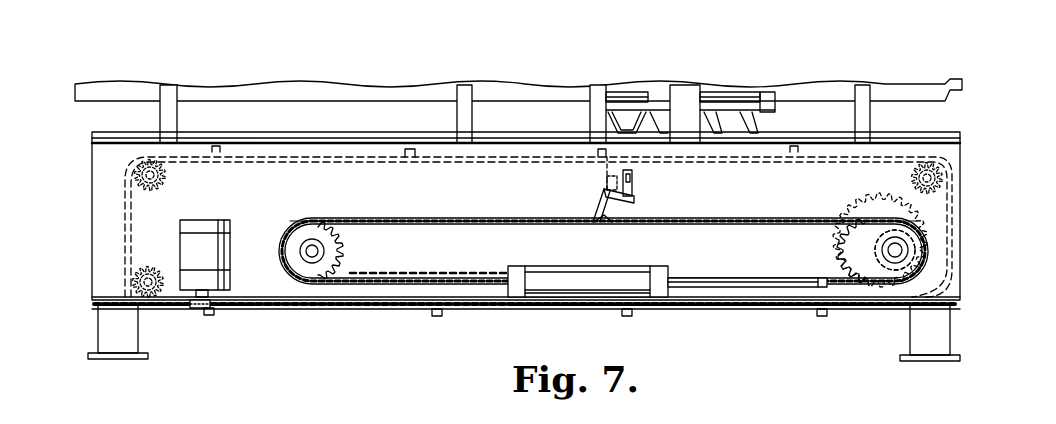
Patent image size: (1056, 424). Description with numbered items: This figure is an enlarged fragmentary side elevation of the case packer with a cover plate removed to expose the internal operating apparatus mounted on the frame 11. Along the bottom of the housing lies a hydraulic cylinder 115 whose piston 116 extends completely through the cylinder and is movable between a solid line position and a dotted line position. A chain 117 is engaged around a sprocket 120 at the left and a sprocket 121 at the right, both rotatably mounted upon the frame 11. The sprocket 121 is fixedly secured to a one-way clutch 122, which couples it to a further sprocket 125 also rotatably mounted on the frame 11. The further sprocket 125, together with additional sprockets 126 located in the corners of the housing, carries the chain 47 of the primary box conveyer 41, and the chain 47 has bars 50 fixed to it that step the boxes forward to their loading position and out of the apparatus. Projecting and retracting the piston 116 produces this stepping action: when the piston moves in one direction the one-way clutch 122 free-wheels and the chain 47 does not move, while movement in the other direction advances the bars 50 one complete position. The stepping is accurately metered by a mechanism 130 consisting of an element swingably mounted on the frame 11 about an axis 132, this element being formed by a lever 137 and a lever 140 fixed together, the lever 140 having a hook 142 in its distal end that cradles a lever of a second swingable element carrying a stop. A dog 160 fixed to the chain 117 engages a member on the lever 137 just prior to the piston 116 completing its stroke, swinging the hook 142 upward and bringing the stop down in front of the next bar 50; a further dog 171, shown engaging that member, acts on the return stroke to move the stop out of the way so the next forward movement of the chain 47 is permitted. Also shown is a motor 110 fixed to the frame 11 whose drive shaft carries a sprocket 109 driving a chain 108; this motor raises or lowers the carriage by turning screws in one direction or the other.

The frame 11 is at (112, 326).
The primary box conveyer 41 is at (520, 163).
The chain 47 is at (459, 160).
The bars 50 is at (217, 147).
The chain 108 is at (198, 308).
The sprocket 109 is at (211, 314).
The motor 110 is at (230, 244).
The hydraulic cylinder 115 is at (597, 273).
The piston 116 is at (699, 280).
The chain 117 is at (726, 219).
The sprocket 120 is at (334, 243).
The sprocket 121 is at (864, 247).
The one-way clutch 122 is at (880, 200).
The further sprocket 125 is at (947, 246).
The additional sprockets 126 is at (170, 178).
The mechanism 130 is at (636, 201).
The axis 132 is at (602, 190).
The lever 137 is at (596, 207).
The lever 140 is at (635, 201).
The hook 142 is at (633, 182).
The dog 160 is at (447, 217).
The further dog 171 is at (611, 224).